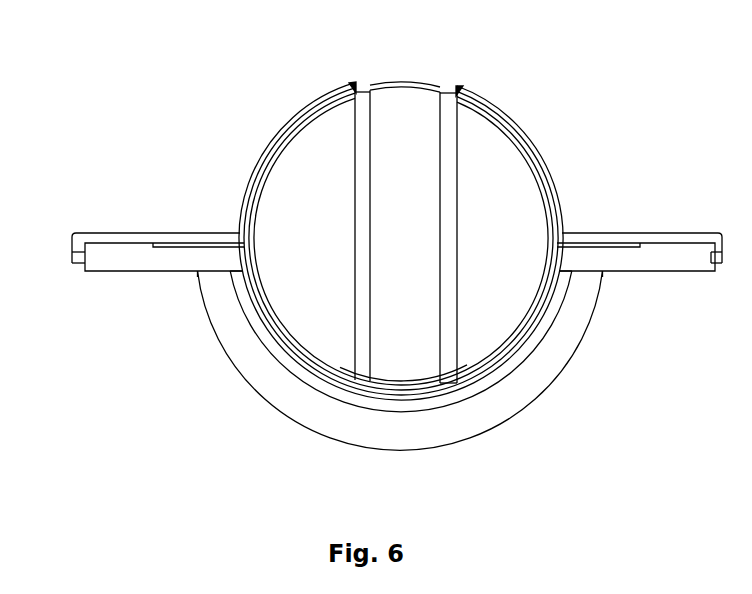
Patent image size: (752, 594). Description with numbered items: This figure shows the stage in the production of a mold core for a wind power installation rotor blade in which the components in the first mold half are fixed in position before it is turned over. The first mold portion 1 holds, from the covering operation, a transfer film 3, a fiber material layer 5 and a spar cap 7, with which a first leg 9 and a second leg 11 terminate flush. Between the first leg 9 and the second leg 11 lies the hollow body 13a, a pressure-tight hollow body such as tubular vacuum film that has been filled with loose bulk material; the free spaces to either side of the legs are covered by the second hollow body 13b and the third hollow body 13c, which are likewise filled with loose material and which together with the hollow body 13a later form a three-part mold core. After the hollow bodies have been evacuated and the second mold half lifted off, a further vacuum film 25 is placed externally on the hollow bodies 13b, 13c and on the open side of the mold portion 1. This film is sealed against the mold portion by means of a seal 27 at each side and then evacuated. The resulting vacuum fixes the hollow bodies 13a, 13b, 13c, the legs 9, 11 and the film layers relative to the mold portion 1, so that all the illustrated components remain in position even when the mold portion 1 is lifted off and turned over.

The first mold portion 1 is at (292, 393).
The transfer film 3 is at (358, 403).
The fiber material layer 5 is at (425, 393).
The spar cap 7 is at (440, 380).
The first leg 9 is at (360, 91).
The second leg 11 is at (451, 93).
The hollow body 13a is at (405, 232).
The second hollow body 13b is at (304, 242).
The third hollow body 13c is at (499, 242).
The further vacuum film 25 is at (262, 150).
The seal 27 is at (79, 266).